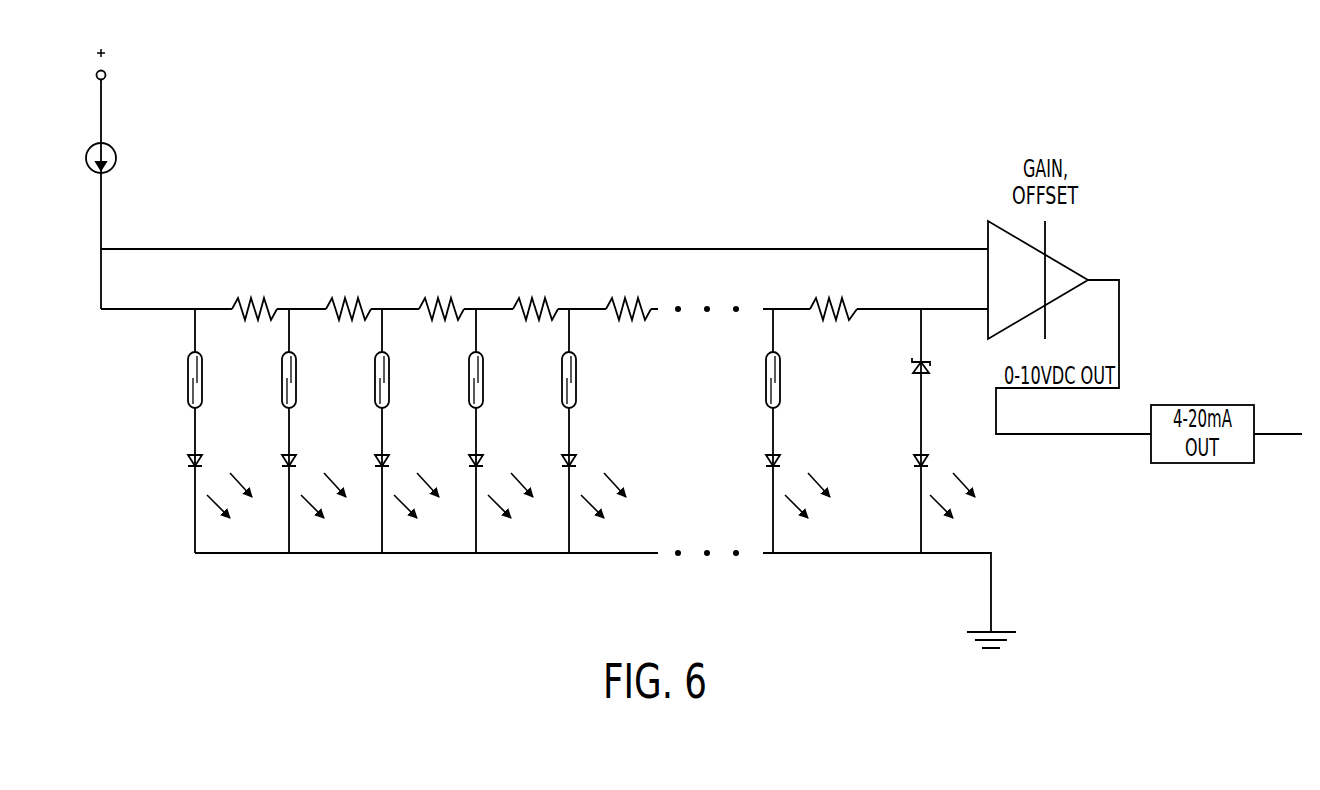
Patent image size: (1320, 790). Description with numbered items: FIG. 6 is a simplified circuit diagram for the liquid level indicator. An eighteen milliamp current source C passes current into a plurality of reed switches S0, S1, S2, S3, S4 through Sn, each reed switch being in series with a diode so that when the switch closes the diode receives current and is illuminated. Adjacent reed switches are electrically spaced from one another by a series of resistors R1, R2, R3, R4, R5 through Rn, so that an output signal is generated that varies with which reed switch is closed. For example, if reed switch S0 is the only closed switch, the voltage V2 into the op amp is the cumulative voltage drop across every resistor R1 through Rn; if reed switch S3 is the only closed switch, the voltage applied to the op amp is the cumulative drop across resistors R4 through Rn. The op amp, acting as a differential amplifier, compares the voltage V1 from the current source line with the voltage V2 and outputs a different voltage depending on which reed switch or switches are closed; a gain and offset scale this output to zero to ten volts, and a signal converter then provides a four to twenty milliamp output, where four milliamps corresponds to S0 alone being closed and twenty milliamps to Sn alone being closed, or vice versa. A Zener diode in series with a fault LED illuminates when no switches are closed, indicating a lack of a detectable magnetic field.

The current source C is at (87, 158).
The resistor R1 is at (254, 297).
The resistor R2 is at (348, 297).
The resistor R3 is at (441, 297).
The resistor R4 is at (535, 297).
The resistor R5 is at (628, 297).
The resistor Rn is at (833, 297).
The reed switch S0 is at (211, 431).
The reed switch S1 is at (305, 431).
The reed switch S2 is at (398, 431).
The reed switch S3 is at (492, 431).
The reed switch S4 is at (585, 431).
The reed switch Sn is at (790, 431).
The voltage V1 is at (973, 234).
The voltage V2 is at (973, 294).